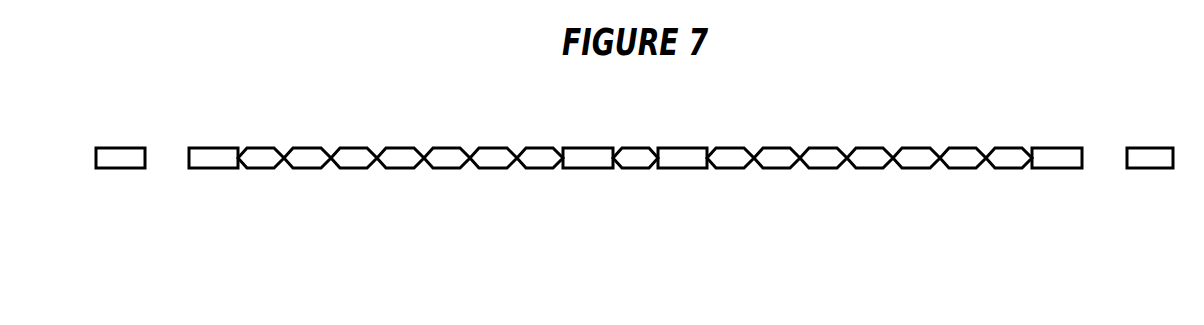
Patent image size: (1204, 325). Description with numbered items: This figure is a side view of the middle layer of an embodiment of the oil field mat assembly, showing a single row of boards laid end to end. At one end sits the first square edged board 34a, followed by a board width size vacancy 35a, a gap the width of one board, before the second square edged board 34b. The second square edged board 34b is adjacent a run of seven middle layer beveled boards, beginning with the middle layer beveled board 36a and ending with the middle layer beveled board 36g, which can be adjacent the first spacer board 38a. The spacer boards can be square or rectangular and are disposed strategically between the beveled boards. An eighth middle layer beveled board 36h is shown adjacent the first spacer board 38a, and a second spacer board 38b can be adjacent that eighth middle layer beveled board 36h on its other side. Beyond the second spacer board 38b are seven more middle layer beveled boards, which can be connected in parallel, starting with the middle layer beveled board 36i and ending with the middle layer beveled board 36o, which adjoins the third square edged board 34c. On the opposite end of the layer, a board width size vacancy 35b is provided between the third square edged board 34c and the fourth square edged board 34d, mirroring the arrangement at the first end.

The first square edged board 34a is at (122, 147).
The board width size vacancy 35a is at (165, 147).
The second square edged board 34b is at (215, 147).
The middle layer beveled board 36a is at (262, 147).
The middle layer beveled board 36g is at (542, 147).
The first spacer board 38a is at (588, 147).
The eighth middle layer beveled board 36h is at (635, 147).
The second spacer board 38b is at (680, 147).
The middle layer beveled board 36i is at (728, 147).
The middle layer beveled board 36o is at (1012, 147).
The third square edged board 34c is at (1058, 147).
The board width size vacancy 35b is at (1105, 147).
The fourth square edged board 34d is at (1150, 147).